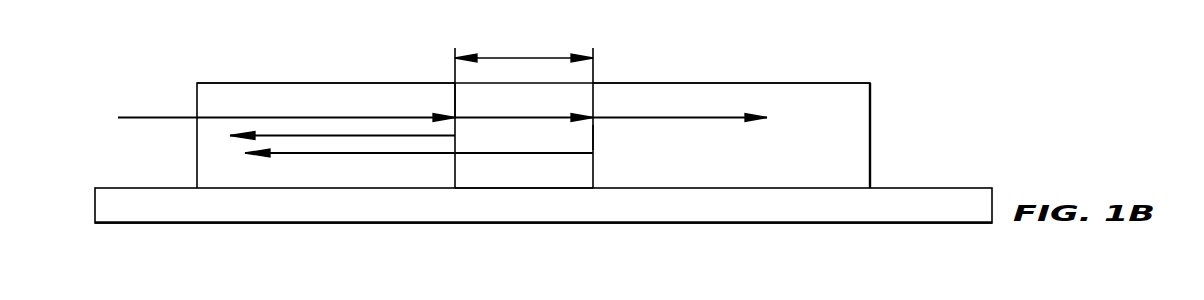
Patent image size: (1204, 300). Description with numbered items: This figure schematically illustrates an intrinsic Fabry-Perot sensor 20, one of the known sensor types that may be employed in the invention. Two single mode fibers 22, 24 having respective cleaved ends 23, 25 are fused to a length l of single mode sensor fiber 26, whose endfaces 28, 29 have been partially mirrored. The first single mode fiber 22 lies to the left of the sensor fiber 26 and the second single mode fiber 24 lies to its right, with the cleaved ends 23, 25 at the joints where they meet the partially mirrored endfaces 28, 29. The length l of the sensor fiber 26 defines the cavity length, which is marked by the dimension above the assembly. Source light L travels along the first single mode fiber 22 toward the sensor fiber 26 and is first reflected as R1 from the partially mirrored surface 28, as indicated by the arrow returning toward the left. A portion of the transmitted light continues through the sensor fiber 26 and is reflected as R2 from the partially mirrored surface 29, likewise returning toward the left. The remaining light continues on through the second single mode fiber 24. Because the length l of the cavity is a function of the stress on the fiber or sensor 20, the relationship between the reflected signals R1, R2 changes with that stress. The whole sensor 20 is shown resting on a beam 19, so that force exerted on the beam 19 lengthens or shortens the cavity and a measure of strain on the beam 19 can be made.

The beam 19 is at (947, 187).
The intrinsic Fabry-Perot (IFP) sensor 20 is at (871, 63).
The single mode fiber 22 is at (368, 63).
The cleaved end 23 is at (458, 171).
The single mode fiber 24 is at (702, 82).
The cleaved end 25 is at (590, 166).
The single mode sensor fiber 26 is at (507, 180).
The partially mirrored endface 28 is at (456, 100).
The partially mirrored endface 29 is at (595, 138).
The cavity length l is at (524, 46).
The source light L is at (135, 117).
The first reflected light R1 is at (247, 140).
The second reflected light R2 is at (298, 155).